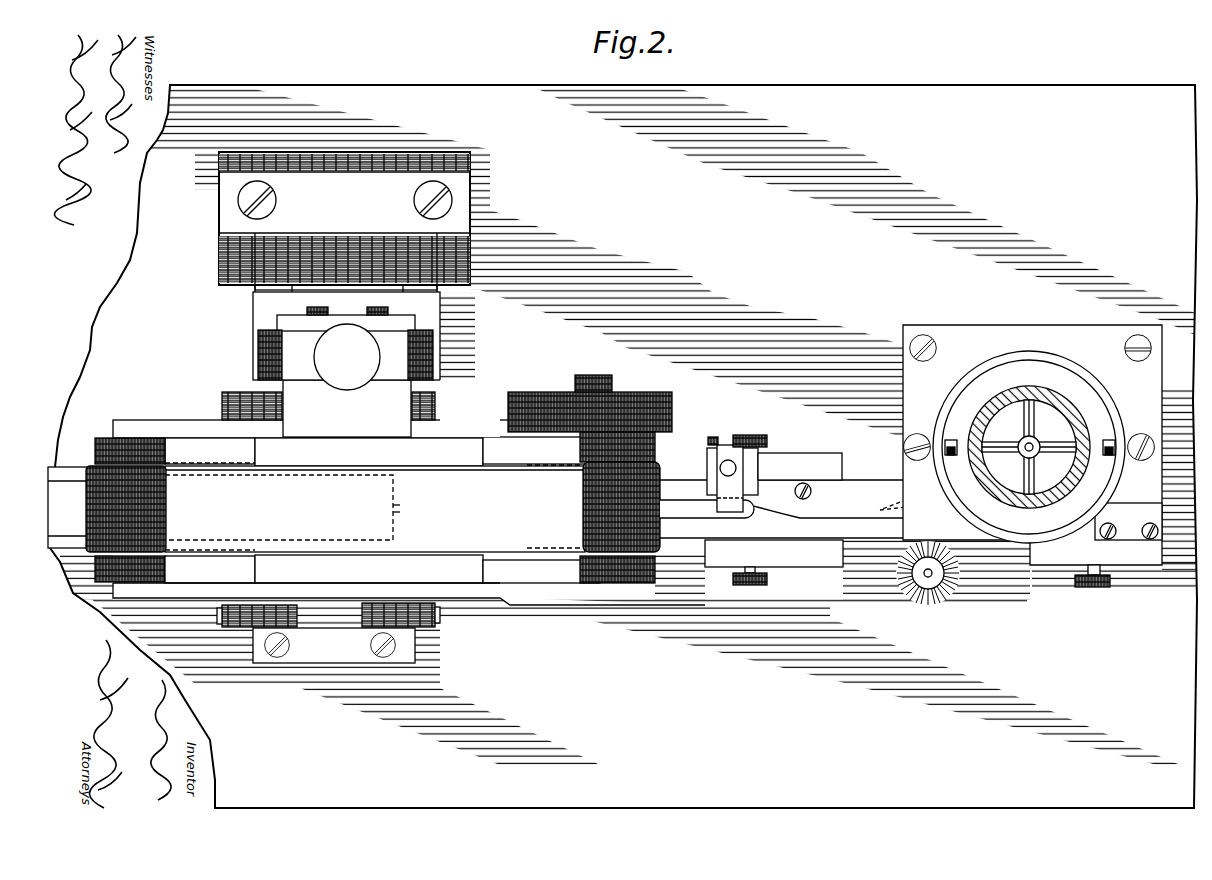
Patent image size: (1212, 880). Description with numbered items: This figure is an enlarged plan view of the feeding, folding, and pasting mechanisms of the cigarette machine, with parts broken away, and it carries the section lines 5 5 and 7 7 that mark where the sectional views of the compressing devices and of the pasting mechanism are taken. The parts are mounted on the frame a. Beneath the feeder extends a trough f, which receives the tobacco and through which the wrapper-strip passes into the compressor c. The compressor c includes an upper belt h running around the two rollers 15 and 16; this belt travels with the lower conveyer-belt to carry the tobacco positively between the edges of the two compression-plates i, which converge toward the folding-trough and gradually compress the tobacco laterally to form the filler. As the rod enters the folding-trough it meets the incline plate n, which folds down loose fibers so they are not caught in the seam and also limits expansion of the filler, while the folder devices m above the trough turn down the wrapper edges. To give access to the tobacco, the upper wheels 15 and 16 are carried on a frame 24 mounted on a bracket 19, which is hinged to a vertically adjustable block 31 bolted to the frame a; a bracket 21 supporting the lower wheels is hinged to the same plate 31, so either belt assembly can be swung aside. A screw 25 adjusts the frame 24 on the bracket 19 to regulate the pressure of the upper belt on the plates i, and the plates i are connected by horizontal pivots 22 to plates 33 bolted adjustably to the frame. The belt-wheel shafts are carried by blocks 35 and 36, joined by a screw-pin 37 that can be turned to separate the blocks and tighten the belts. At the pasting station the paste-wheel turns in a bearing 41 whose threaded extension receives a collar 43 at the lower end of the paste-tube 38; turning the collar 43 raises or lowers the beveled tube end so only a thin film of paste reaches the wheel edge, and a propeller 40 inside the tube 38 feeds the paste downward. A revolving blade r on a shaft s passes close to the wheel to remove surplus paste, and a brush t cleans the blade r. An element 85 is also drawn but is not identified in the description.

The line 5 5 is at (288, 57).
The line 7 7 is at (1029, 830).
The upper wheel 15 is at (110, 462).
The upper wheel 16 is at (657, 463).
The bracket 19 is at (430, 308).
The bracket 21 is at (265, 290).
The horizontal pivot 22 is at (440, 623).
The frame 24 is at (347, 408).
The screw 25 is at (347, 357).
The adjustable block 31 is at (344, 222).
The plate 33 is at (243, 381).
The block 35 is at (175, 569).
The block 36 is at (409, 580).
The screw-pin 37 is at (400, 512).
The paste-tube 38 is at (1083, 407).
The propeller 40 is at (1053, 435).
The bearing 41 is at (1030, 456).
The collar 43 is at (1062, 367).
The knurled wheel 85 is at (607, 418).
The frame a is at (626, 446).
The compressor c is at (470, 404).
The trough f is at (68, 507).
The upper belt h is at (353, 507).
The compression-plate i is at (349, 433).
The folder device m is at (877, 509).
The incline plate n is at (703, 515).
The revolving blade r is at (911, 508).
The shaft s is at (917, 488).
The brush t is at (920, 603).